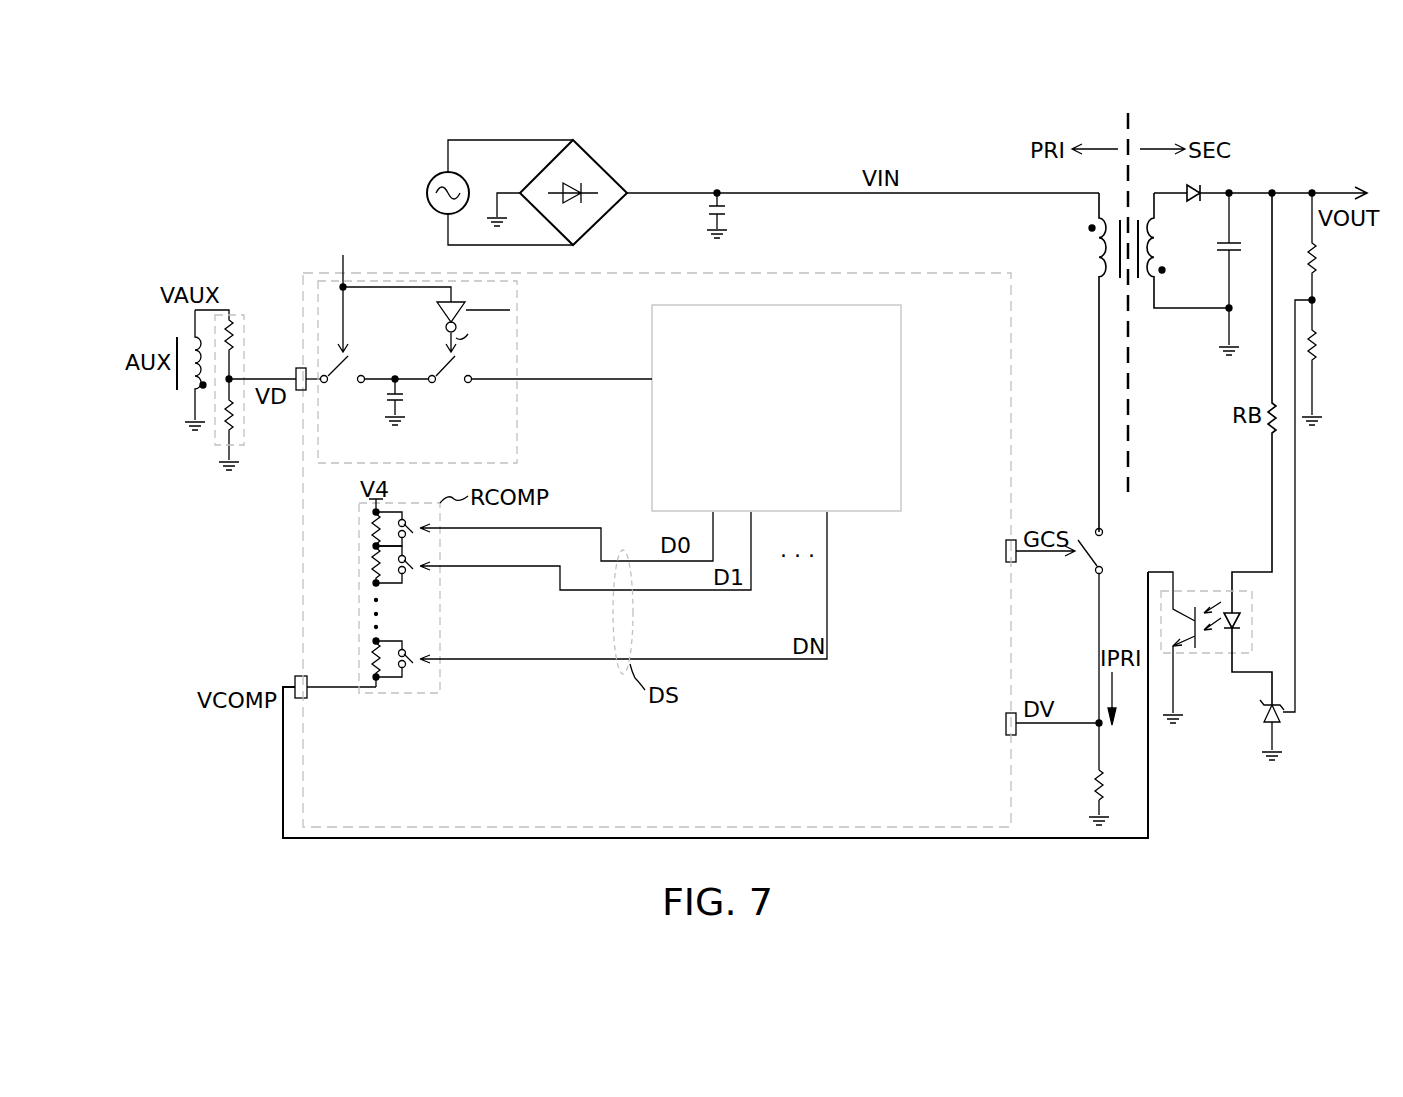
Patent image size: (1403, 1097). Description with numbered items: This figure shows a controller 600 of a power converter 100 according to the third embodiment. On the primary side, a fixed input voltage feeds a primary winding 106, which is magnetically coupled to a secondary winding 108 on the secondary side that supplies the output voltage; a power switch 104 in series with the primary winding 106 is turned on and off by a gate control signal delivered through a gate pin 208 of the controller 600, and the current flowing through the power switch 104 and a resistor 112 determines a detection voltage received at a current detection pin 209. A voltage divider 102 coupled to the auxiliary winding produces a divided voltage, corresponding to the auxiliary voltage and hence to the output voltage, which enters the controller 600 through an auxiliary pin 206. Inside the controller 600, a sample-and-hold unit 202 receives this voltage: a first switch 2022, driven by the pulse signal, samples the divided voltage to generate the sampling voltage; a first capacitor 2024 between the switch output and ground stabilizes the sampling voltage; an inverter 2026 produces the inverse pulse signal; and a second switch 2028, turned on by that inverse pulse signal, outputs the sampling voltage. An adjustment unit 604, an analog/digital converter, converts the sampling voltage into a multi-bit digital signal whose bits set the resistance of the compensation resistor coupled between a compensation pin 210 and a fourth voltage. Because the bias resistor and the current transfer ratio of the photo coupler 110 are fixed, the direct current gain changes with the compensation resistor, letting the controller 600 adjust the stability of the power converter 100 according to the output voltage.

The power converter 100 is at (1285, 173).
The voltage divider 102 is at (241, 315).
The power switch 104 is at (1102, 546).
The primary winding 106 is at (1097, 246).
The secondary winding 108 is at (1180, 243).
The photo coupler 110 is at (1220, 590).
The resistor 112 is at (1115, 764).
The sample-and-hold unit 202 is at (380, 281).
The first switch 2022 is at (345, 384).
The first capacitor 2024 is at (410, 397).
The inverter 2026 is at (439, 314).
The second switch 2028 is at (452, 384).
The auxiliary pin 206 is at (296, 372).
The gate pin 208 is at (1016, 556).
The current detection pin 209 is at (1016, 730).
The compensation pin 210 is at (297, 678).
The controller 600 is at (760, 273).
The adjustment unit 604 is at (901, 366).